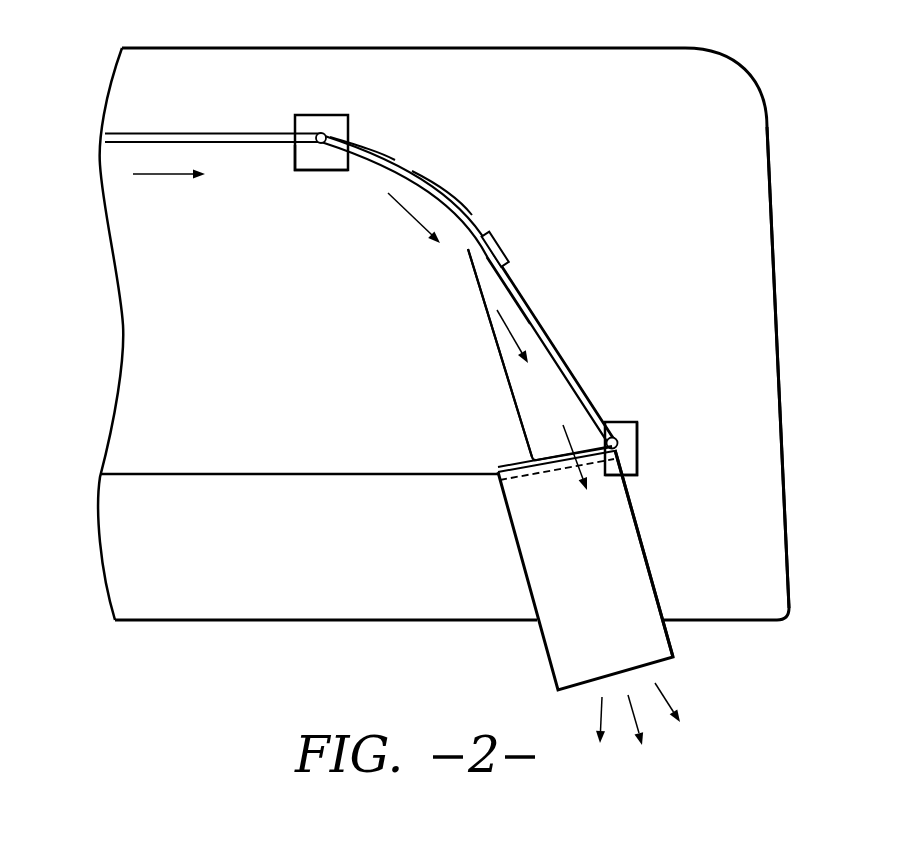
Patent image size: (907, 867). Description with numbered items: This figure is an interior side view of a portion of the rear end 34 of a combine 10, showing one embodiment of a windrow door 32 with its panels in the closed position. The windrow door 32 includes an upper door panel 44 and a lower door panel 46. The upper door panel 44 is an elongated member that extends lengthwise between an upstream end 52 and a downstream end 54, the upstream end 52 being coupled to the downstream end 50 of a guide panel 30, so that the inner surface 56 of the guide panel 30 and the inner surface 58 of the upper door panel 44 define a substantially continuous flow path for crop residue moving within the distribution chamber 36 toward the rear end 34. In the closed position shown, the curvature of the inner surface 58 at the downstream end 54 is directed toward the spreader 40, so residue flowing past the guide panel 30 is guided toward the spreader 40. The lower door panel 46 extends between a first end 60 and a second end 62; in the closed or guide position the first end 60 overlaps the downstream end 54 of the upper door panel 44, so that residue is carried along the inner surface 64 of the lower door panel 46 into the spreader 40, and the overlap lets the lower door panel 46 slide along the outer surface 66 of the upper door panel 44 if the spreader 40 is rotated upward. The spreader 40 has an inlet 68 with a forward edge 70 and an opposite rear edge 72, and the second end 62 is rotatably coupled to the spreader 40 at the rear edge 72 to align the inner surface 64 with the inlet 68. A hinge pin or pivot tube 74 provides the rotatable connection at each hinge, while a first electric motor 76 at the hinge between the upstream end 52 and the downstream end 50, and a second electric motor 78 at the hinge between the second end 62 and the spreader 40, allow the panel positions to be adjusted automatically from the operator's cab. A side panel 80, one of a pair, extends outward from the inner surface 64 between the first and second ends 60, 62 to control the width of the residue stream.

The combine 10 is at (808, 107).
The guide panel 30 is at (208, 130).
The windrow door 32 is at (555, 180).
The rear end 34 is at (774, 260).
The distribution chamber 36 is at (258, 352).
The spreader 40 is at (574, 599).
The upper door panel 44 is at (437, 178).
The lower door panel 46 is at (560, 339).
The downstream end 50 is at (310, 114).
The upstream end 52 is at (348, 120).
The downstream end 54 is at (477, 248).
The inner surface 56 is at (258, 143).
The inner surface 58 is at (377, 163).
The first end 60 is at (500, 248).
The second end 62 is at (606, 432).
The inner surface 64 is at (556, 368).
The outer surface 66 is at (460, 205).
The inlet 68 is at (528, 481).
The forward edge 70 is at (500, 472).
The rear edge 72 is at (621, 468).
The hinge pin or pivot tube 74 is at (322, 132).
The first electric motor 76 is at (308, 170).
The second electric motor 78 is at (638, 432).
The side panels 80 is at (518, 408).